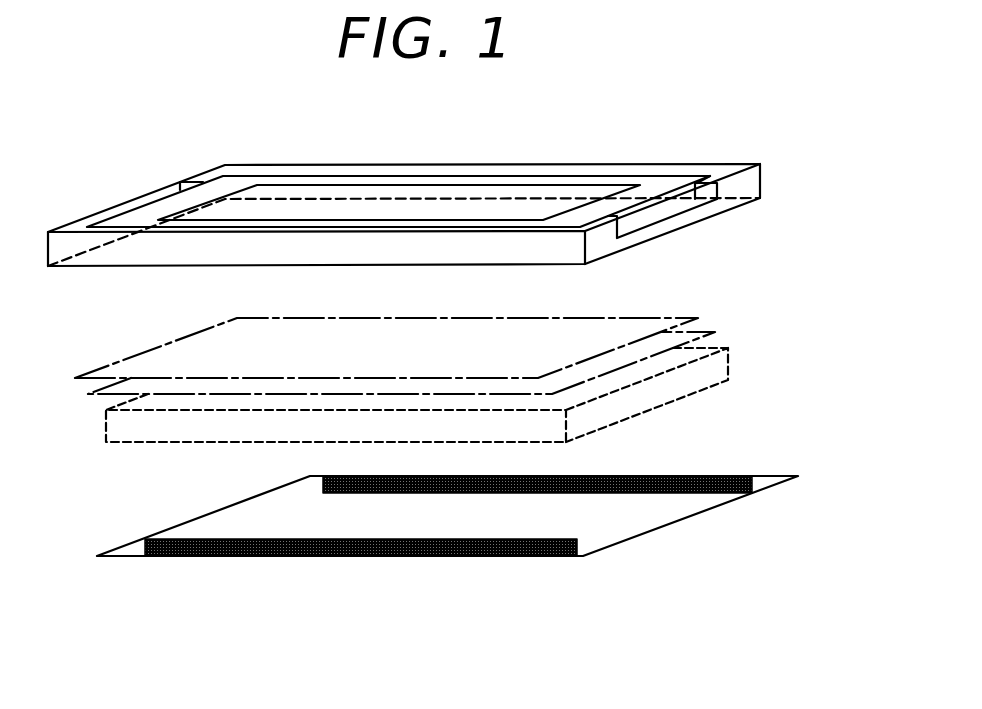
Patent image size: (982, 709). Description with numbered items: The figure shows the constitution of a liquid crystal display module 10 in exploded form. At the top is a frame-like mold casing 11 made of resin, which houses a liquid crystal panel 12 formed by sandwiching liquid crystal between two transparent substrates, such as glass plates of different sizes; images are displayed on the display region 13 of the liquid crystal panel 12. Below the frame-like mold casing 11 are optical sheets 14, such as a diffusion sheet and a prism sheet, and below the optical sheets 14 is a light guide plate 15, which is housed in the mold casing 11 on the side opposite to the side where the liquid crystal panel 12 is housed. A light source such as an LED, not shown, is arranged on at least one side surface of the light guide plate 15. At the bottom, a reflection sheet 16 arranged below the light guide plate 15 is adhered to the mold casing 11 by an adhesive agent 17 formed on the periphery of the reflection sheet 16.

The liquid crystal display module 10 is at (840, 140).
The mold casing 11 is at (73, 225).
The liquid crystal panel 12 is at (560, 182).
The display region 13 is at (597, 189).
The optical sheets 14 is at (793, 285).
The light guide plate 15 is at (710, 371).
The reflection sheet 16 is at (655, 515).
The adhesive agent 17 is at (357, 493).